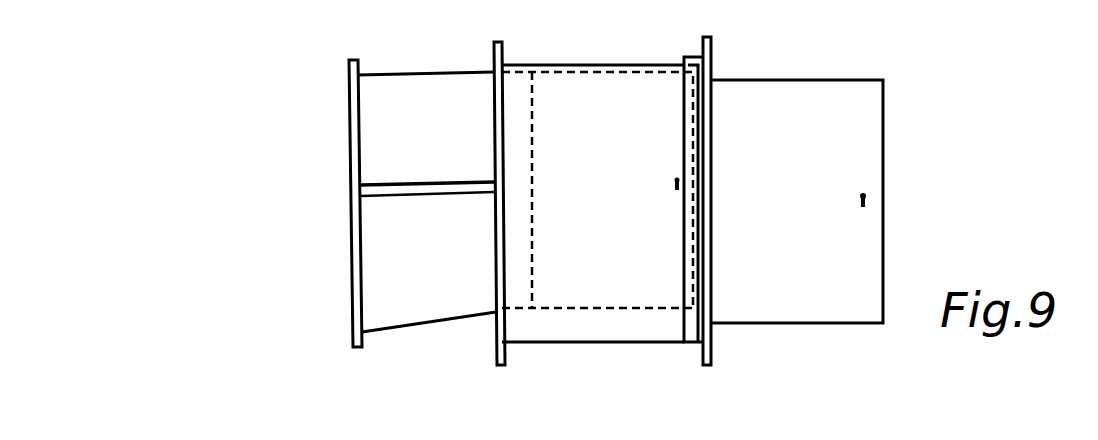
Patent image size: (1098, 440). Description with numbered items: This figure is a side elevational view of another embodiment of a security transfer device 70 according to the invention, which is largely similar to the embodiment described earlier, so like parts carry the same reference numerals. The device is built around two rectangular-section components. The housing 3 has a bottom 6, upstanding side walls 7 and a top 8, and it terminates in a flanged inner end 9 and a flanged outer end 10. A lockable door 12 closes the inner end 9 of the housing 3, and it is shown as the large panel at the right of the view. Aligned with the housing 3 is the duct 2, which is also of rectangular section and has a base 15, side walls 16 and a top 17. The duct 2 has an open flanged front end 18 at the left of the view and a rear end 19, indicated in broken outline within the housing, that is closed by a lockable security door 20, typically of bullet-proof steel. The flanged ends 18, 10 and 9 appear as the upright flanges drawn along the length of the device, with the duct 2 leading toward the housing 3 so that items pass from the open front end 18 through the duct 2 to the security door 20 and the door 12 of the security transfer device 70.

The duct 2 is at (430, 98).
The housing 3 is at (617, 87).
The bottom 6 is at (607, 342).
The side walls 7 is at (580, 283).
The top 8 is at (552, 63).
The flanged inner end 9 is at (710, 53).
The flanged outer end 10 is at (496, 338).
The lockable door 12 is at (862, 128).
The base 15 is at (398, 333).
The side walls 16 is at (378, 248).
The top 17 is at (390, 73).
The open flanged front end 18 is at (348, 87).
The rear end 19 is at (533, 205).
The lockable security door 20 is at (650, 308).
The security transfer device 70 is at (912, 63).